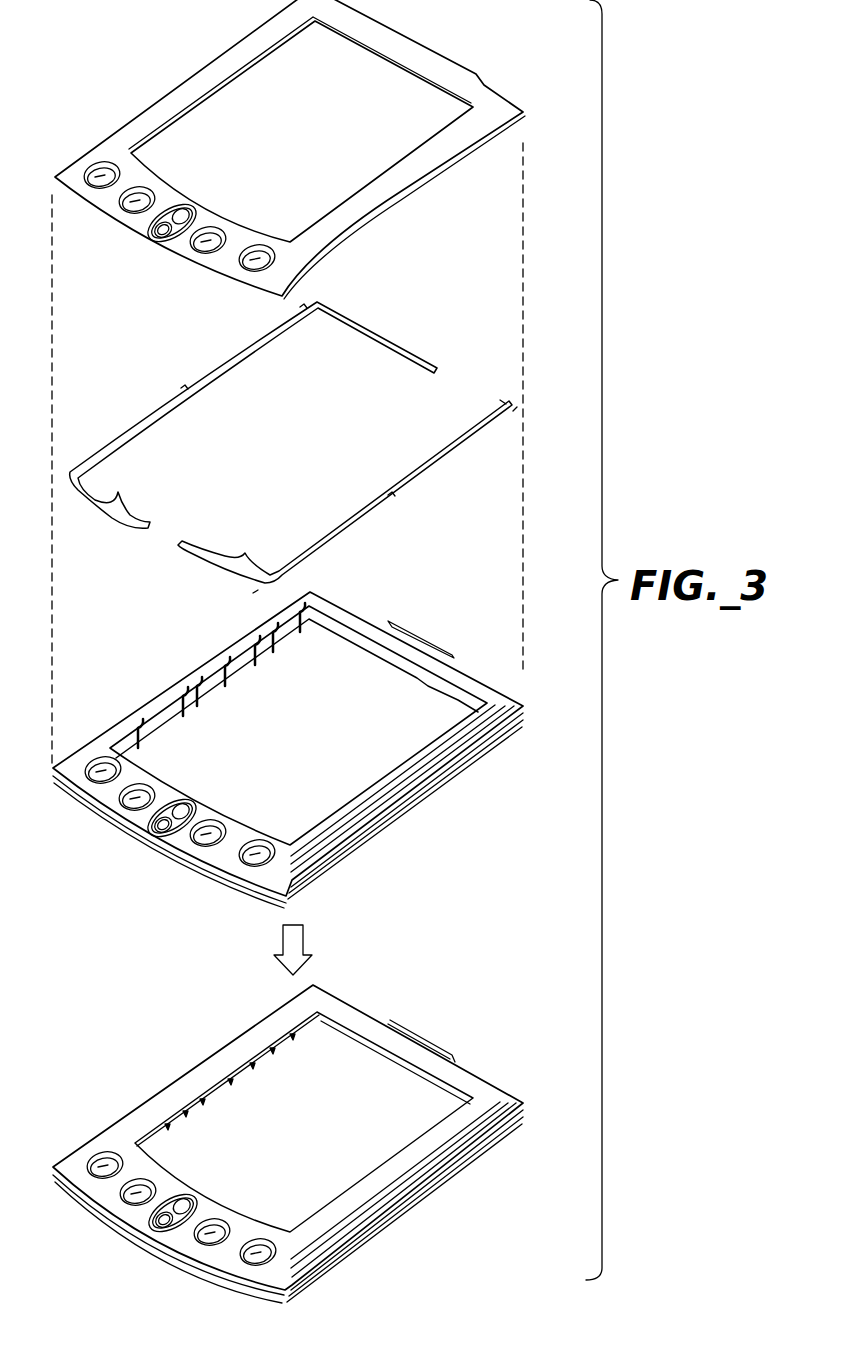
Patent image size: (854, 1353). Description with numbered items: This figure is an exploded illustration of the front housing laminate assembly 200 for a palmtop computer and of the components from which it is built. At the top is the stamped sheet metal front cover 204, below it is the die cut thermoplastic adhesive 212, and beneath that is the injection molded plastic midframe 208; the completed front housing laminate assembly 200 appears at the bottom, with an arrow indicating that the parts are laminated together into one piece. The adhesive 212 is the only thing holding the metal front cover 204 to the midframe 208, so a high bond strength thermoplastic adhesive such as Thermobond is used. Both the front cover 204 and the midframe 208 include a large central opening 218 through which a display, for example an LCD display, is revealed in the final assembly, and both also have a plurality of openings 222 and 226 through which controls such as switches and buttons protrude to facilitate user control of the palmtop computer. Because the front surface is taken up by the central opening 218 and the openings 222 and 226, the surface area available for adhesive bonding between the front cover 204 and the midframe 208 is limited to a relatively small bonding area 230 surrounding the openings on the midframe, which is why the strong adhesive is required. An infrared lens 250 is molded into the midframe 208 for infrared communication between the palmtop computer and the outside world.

The front housing laminate assembly 200 is at (386, 1239).
The front cover 204 is at (290, 160).
The midframe 208 is at (273, 750).
The thermoplastic adhesive 212 is at (197, 367).
The central opening 218 is at (237, 103).
The openings 222 is at (137, 203).
The openings 226 is at (157, 828).
The bonding area 230 is at (362, 618).
The infrared lens 250 is at (423, 637).